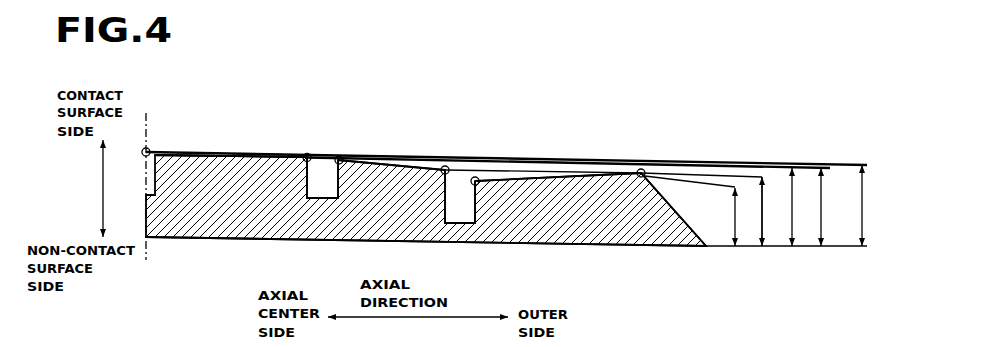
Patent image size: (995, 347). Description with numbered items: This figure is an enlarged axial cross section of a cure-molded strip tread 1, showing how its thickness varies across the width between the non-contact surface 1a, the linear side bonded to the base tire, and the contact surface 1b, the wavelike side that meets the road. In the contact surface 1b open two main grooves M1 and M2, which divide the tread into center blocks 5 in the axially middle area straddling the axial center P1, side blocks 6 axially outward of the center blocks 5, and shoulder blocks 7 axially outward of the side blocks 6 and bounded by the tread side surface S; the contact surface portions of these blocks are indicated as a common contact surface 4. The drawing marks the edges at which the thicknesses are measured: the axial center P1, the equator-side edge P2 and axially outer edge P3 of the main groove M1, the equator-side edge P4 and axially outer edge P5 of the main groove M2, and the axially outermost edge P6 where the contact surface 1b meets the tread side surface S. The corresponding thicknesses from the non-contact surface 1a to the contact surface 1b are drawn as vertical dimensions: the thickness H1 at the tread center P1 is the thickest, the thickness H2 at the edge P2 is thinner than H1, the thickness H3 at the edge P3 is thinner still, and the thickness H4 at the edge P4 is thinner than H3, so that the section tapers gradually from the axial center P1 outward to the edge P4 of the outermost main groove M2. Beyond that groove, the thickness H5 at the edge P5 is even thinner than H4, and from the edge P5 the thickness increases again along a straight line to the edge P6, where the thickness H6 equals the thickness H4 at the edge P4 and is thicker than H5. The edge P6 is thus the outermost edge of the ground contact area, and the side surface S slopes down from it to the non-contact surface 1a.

The tread 1 is at (458, 95).
The non-contact surface 1a is at (462, 243).
The contact surface 1b is at (230, 153).
The contact surface 4 is at (398, 126).
The center blocks 5 is at (212, 170).
The side blocks 6 is at (384, 164).
The shoulder blocks 7 is at (572, 177).
The main groove M1 is at (320, 180).
The main groove M2 is at (462, 197).
The axial center P1 is at (146, 148).
The axial center side edge of main groove M1 P2 is at (306, 154).
The axially outer edge of main groove M1 P3 is at (341, 156).
The axial center side edge of main groove M2 P4 is at (444, 166).
The axially outer edge of main groove M2 P5 is at (477, 177).
The axially outermost edge of the contact surface P6 is at (641, 169).
The tread side surface S is at (671, 206).
The thickness at the tread center H1 is at (861, 210).
The thickness at edge P2 H2 is at (820, 210).
The thickness at edge P3 H3 is at (791, 210).
The thickness at edge P4 H4 is at (761, 210).
The thickness at edge P5 H5 is at (733, 207).
The thickness at edge P6 H6 is at (742, 190).